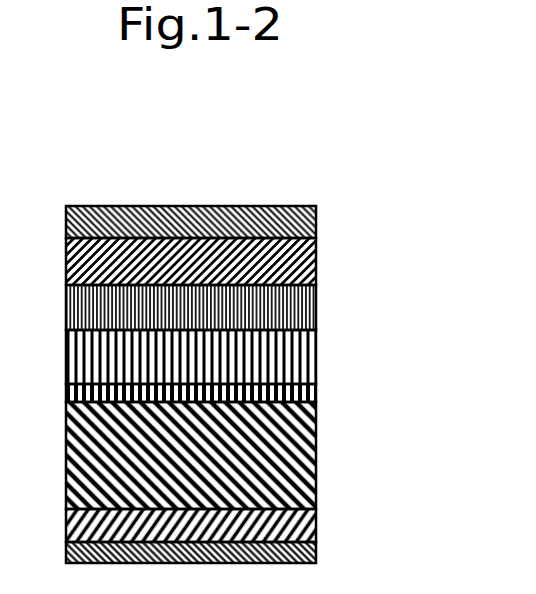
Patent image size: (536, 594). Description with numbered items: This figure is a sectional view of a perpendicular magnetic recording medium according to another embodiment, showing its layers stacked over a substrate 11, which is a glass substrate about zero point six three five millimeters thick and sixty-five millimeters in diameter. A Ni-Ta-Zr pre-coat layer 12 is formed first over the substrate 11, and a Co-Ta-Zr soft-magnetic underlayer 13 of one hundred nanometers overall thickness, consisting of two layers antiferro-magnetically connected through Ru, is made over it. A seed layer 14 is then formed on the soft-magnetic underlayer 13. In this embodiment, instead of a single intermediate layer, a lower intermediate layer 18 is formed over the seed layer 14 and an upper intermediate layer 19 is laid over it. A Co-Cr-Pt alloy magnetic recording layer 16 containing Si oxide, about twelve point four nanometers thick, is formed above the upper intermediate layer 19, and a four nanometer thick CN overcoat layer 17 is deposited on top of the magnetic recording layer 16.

The substrate 11 is at (303, 548).
The pre-coat layer 12 is at (303, 531).
The soft-magnetic underlayer 13 is at (303, 482).
The seed layer 14 is at (303, 397).
The lower intermediate layer 18 is at (303, 350).
The upper intermediate layer 19 is at (303, 306).
The magnetic recording layer 16 is at (316, 266).
The overcoat layer 17 is at (316, 222).